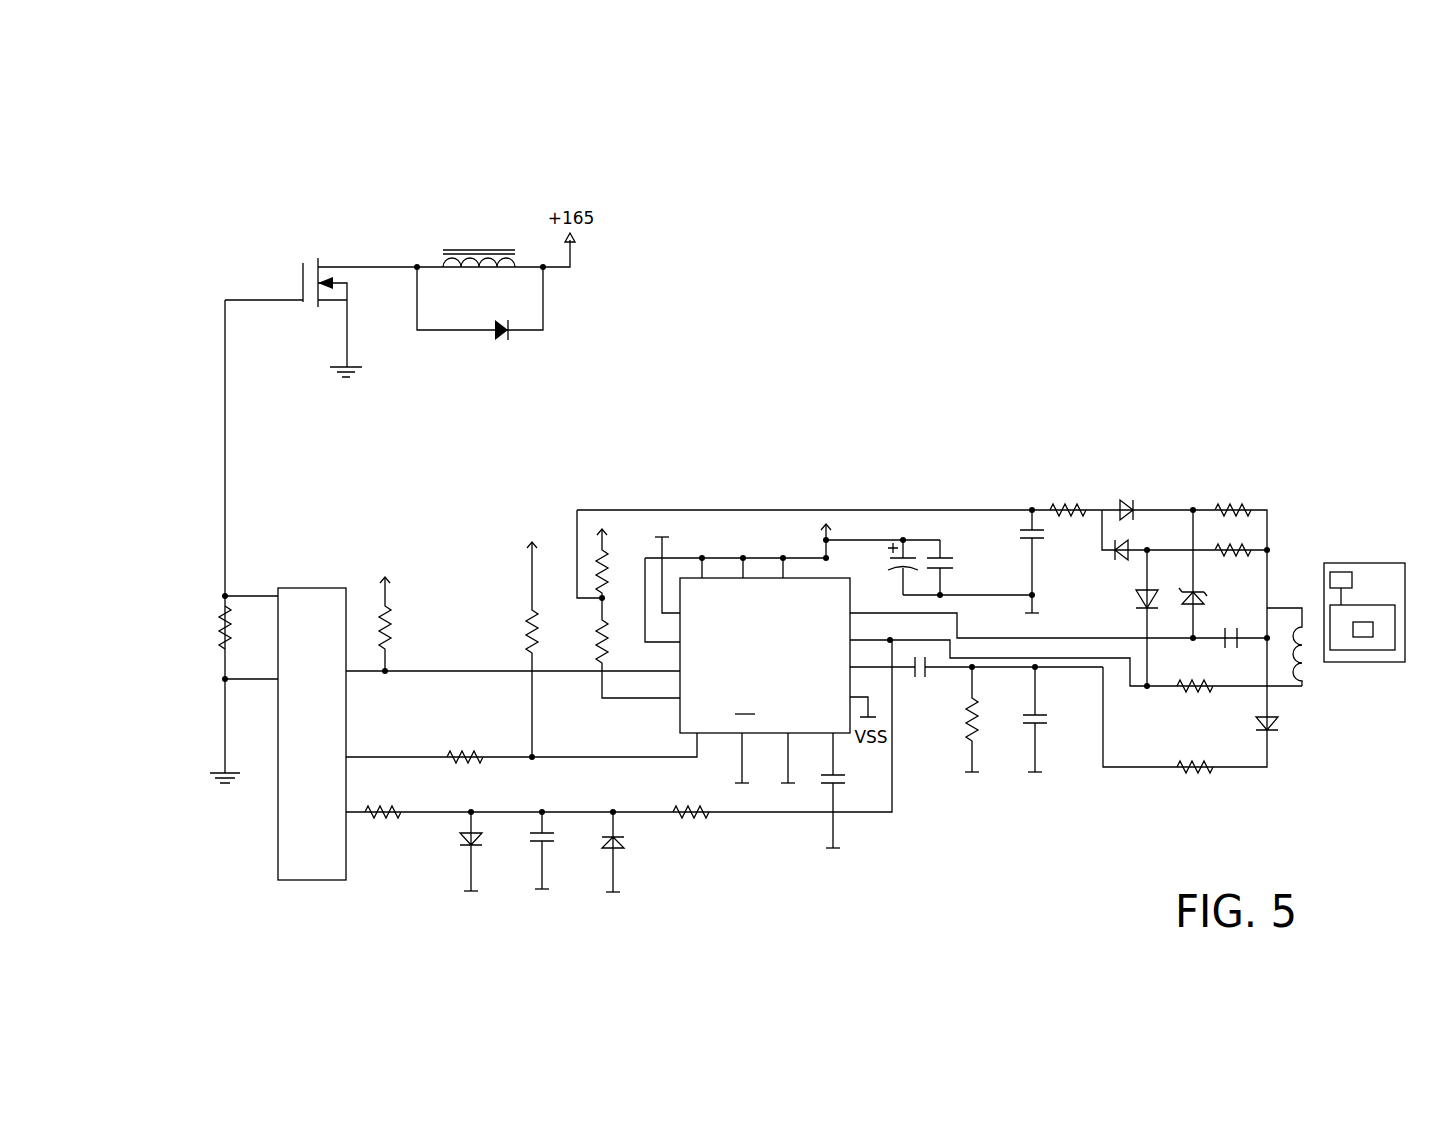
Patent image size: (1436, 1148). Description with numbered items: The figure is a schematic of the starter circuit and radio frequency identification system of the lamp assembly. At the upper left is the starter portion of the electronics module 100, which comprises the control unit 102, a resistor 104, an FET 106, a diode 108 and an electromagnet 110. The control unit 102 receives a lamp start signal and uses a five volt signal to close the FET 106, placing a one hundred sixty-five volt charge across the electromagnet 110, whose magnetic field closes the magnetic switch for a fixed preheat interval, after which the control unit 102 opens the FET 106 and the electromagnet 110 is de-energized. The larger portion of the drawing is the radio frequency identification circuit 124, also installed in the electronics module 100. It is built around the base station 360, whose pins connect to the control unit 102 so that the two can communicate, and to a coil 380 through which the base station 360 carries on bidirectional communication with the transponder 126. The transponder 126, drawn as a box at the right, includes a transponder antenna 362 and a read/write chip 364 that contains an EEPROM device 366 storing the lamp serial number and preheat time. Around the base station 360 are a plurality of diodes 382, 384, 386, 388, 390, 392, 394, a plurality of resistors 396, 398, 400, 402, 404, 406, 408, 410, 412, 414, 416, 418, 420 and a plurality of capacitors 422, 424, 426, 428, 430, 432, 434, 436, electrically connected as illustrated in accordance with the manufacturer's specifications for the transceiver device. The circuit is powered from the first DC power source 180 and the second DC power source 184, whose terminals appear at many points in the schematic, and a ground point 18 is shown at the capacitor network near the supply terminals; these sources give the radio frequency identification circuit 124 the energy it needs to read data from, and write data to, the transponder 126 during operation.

The electronics module 100 is at (320, 190).
The control unit 102 is at (300, 598).
The resistor 104 is at (222, 637).
The FET 106 is at (302, 283).
The diode 108 is at (510, 333).
The electromagnet 110 is at (478, 256).
The radio frequency identification circuit 124 is at (1020, 396).
The transponder 126 is at (1353, 562).
The ground 18 is at (1038, 606).
The first DC power source 180 is at (667, 540).
The second DC power source 184 is at (380, 578).
The base station 360 is at (760, 585).
The transponder antenna 362 is at (1340, 572).
The read/write IDIC chip 364 is at (1366, 612).
The EEPROM device 366 is at (1365, 640).
The coil 380 is at (1312, 630).
The diode 382 is at (465, 841).
The diode 384 is at (625, 845).
The diode 386 is at (1115, 545).
The diode 388 is at (1134, 505).
The diode 390 is at (1136, 604).
The diode 392 is at (1188, 600).
The diode 394 is at (1276, 731).
The resistor 396 is at (390, 611).
The resistor 398 is at (469, 753).
The resistor 400 is at (385, 809).
The resistor 402 is at (530, 627).
The resistor 404 is at (600, 629).
The resistor 406 is at (605, 560).
The resistor 408 is at (712, 822).
The resistor 410 is at (970, 728).
The resistor 412 is at (1070, 508).
The resistor 414 is at (1248, 510).
The resistor 416 is at (1243, 548).
The resistor 418 is at (1176, 690).
The resistor 420 is at (1180, 772).
The capacitor 422 is at (536, 838).
The capacitor 424 is at (838, 778).
The capacitor 426 is at (912, 555).
The capacitor 428 is at (945, 557).
The capacitor 430 is at (948, 688).
The capacitor 432 is at (1030, 530).
The capacitor 434 is at (1040, 712).
The capacitor 436 is at (1225, 635).